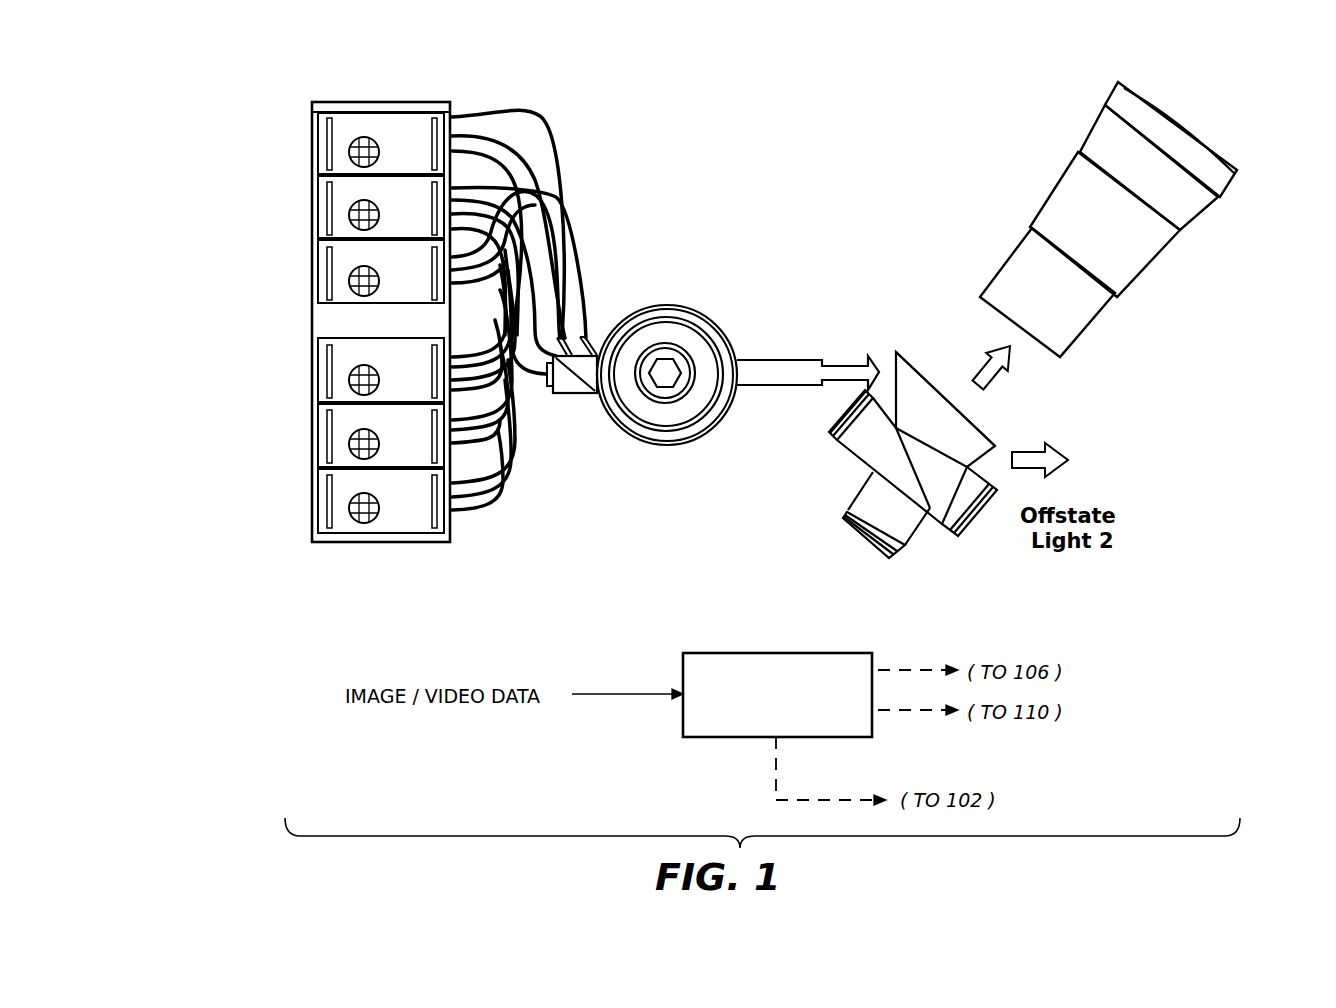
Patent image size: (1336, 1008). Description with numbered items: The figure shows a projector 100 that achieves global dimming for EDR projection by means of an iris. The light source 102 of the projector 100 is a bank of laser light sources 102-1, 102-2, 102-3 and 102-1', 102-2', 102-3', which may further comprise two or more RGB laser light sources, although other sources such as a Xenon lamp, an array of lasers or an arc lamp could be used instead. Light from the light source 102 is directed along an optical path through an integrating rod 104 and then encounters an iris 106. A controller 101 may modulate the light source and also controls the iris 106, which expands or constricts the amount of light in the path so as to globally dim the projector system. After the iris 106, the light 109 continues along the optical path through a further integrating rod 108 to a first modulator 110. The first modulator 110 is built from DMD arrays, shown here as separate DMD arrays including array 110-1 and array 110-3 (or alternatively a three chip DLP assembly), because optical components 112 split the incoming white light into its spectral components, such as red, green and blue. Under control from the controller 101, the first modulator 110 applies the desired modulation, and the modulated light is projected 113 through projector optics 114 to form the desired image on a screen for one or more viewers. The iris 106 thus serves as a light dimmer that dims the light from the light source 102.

The projection display system 100 is at (797, 137).
The controller 101 is at (820, 653).
The light source module array 102 is at (450, 550).
The light source module 102-1 is at (333, 500).
The light source module 102-2 is at (333, 435).
The light source module 102-3 is at (333, 370).
The light source module 102-1' is at (331, 268).
The light source module 102-2' is at (331, 204).
The light source module 102-3' is at (331, 140).
The optical fiber combiner 104 is at (577, 395).
The color wheel 106 is at (688, 313).
The light beam 108 is at (755, 362).
The TIR prism 109 is at (868, 357).
The spatial light modulator assembly 110 is at (960, 560).
The spatial light modulator 110-1 is at (838, 440).
The spatial light modulator 110-3 is at (974, 528).
The prism 112 is at (971, 439).
The projected light 113 is at (1018, 366).
The projection lens 114 is at (1093, 137).